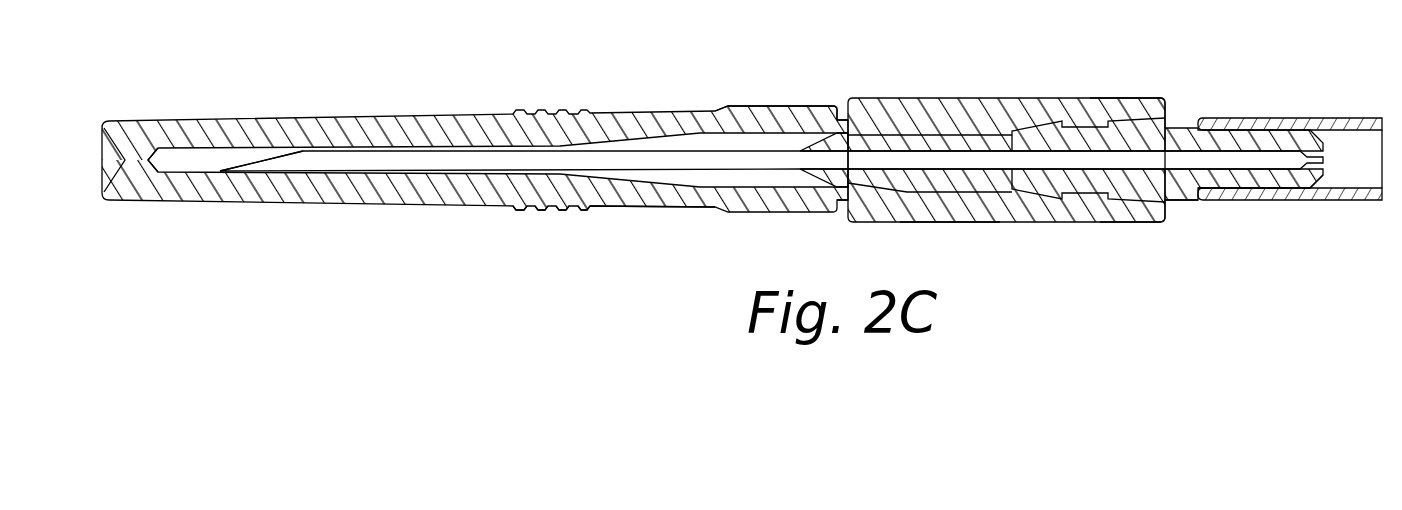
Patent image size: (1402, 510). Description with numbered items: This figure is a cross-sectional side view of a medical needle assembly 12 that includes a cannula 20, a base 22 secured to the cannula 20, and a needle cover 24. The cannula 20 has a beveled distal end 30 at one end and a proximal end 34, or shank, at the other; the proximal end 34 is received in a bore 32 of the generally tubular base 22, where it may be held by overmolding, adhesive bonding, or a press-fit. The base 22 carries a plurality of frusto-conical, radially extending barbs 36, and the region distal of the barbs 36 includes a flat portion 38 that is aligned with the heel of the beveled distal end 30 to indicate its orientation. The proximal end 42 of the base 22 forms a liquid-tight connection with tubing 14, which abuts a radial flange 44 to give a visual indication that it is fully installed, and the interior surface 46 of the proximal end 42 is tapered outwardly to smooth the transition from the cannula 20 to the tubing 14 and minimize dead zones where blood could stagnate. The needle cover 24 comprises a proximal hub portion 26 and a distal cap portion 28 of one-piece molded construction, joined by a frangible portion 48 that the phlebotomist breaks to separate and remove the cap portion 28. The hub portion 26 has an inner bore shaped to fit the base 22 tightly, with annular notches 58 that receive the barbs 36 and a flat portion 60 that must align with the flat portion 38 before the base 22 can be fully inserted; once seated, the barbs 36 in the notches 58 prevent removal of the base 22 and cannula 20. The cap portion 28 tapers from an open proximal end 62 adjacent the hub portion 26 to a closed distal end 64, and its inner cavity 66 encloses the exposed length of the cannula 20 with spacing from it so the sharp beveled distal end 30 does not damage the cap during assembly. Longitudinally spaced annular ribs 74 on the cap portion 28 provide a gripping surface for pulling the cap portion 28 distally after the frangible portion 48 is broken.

The medical needle assembly 12 is at (344, 259).
The tubing 14 is at (1310, 117).
The cannula 20 is at (414, 162).
The base 22 is at (1125, 207).
The needle cover 24 is at (677, 211).
The hub portion 26 is at (1088, 97).
The cap portion 28 is at (190, 133).
The beveled distal end 30 is at (235, 165).
The bore 32 is at (970, 206).
The proximal end 34 is at (1184, 160).
The barbs 36 is at (1057, 197).
The flat portion 38 is at (962, 137).
The proximal end 42 is at (1282, 201).
The radial flange 44 is at (1180, 201).
The interior surface 46 is at (1324, 174).
The frangible portion 48 is at (842, 119).
The annular notches 58 is at (1040, 134).
The flat portion 60 is at (897, 147).
The open proximal end 62 is at (772, 105).
The closed distal end 64 is at (113, 196).
The inner cavity 66 is at (187, 167).
The annular ribs 74 is at (537, 209).